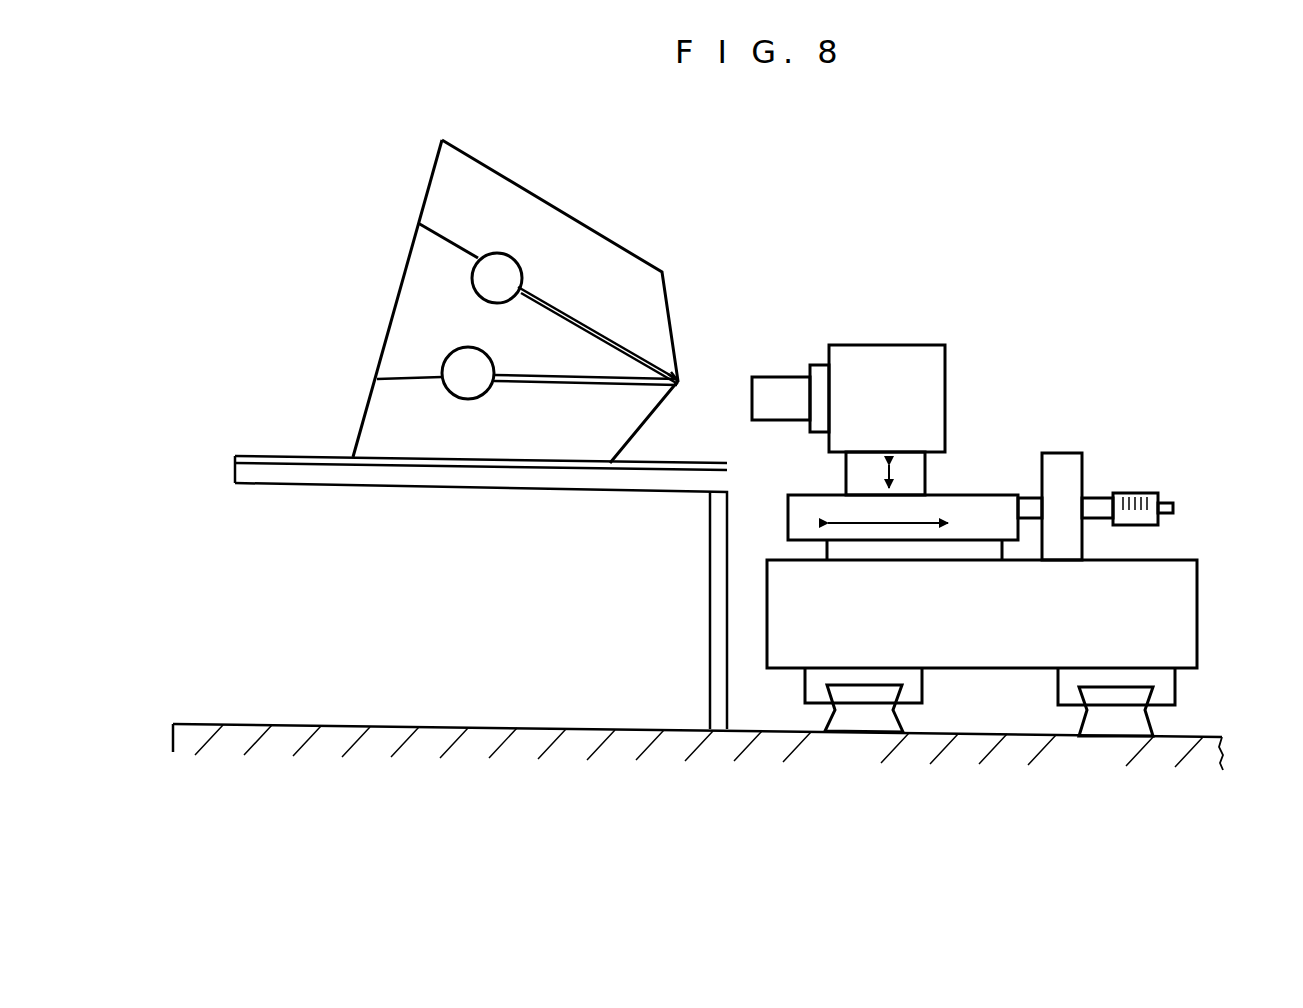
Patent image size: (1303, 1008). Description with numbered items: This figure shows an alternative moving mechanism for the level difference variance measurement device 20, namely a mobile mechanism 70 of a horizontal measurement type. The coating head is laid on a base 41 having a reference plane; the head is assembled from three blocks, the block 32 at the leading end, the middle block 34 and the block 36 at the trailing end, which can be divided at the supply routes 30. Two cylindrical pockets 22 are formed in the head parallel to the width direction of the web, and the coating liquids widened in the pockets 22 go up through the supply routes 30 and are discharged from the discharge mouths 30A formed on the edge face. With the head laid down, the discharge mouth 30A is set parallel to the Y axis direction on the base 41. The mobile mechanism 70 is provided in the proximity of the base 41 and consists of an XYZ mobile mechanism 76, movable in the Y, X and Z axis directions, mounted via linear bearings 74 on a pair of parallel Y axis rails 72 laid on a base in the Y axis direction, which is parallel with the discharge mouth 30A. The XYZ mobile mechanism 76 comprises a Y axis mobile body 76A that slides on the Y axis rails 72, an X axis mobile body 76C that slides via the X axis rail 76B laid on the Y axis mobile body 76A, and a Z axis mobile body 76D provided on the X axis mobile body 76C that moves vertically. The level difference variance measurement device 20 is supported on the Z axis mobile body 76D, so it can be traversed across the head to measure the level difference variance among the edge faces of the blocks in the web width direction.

The level difference variance measurement device 20 is at (878, 372).
The cylindrical pocket 22 is at (497, 270).
The supply route 30 is at (613, 340).
The discharge mouth 30A is at (667, 373).
The block at the leading end 32 is at (585, 265).
The middle block 34 is at (415, 308).
The block at the trailing end 36 is at (503, 445).
The base 41 is at (668, 480).
The mobile mechanism of horizontal measurement type 70 is at (1026, 290).
The Y axis rail 72 is at (860, 725).
The linear bearing 74 is at (925, 685).
The XYZ mobile mechanism 76 is at (1130, 482).
The Y axis mobile body 76A is at (1157, 618).
The X axis rail 76B is at (948, 550).
The X axis mobile body 76C is at (998, 512).
The Z axis mobile body 76D is at (915, 475).